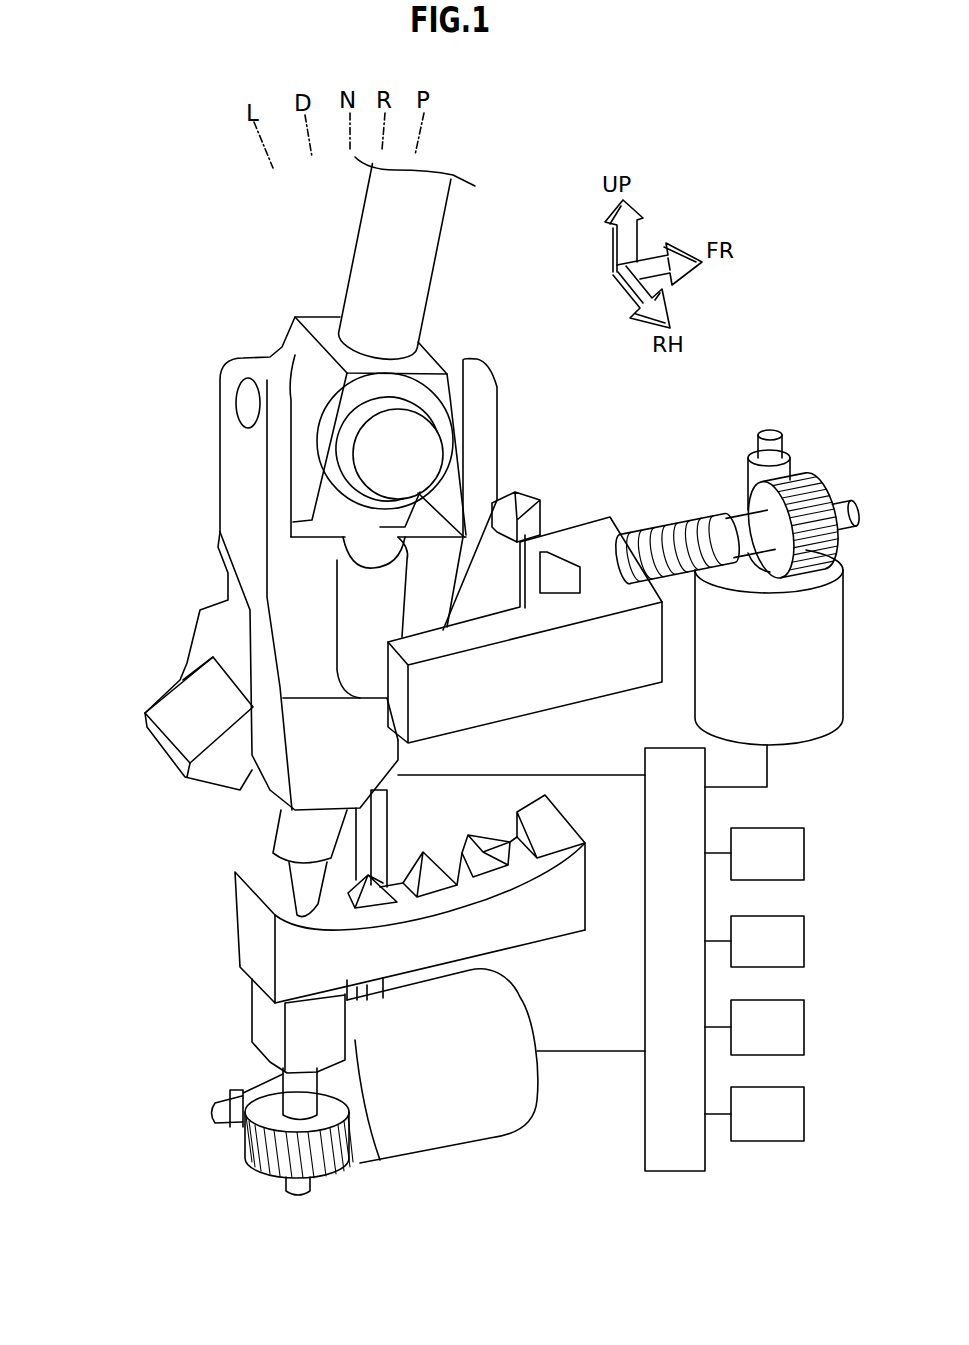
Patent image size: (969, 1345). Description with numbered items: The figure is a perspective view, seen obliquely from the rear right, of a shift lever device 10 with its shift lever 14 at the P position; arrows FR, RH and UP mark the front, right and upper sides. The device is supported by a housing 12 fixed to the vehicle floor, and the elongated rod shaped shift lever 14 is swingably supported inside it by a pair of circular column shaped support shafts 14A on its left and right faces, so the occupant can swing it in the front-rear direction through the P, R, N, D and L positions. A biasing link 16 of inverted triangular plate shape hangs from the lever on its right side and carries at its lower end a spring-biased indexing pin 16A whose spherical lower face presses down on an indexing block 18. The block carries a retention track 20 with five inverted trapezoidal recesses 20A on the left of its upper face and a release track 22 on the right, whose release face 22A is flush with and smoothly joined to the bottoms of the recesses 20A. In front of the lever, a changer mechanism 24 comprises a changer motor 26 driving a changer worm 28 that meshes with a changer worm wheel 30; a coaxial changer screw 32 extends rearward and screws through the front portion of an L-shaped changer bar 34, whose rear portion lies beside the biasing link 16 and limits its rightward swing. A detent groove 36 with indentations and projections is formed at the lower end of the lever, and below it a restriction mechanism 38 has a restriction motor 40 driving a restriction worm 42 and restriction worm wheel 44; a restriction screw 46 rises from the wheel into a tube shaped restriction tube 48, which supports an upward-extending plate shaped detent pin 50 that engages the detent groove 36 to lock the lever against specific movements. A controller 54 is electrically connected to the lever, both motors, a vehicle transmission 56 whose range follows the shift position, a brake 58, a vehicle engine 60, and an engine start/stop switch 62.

The shift lever device 10 is at (170, 256).
The housing 12 is at (342, 920).
The shift lever 14 is at (353, 261).
The support shafts 14A is at (430, 442).
The biasing link 16 is at (235, 504).
The indexing pin 16A is at (272, 868).
The indexing block 18 is at (238, 940).
The retention track 20 is at (510, 868).
The recesses 20A is at (453, 870).
The release track 22 is at (537, 860).
The release face 22A is at (472, 888).
The changer mechanism 24 is at (810, 426).
The changer motor 26 is at (693, 693).
The changer worm 28 is at (748, 480).
The changer worm wheel 30 is at (813, 478).
The changer screw 32 is at (660, 528).
The changer bar 34 is at (550, 713).
The detent groove 36 is at (203, 788).
The restriction mechanism 38 is at (162, 1072).
The restriction motor 40 is at (455, 1145).
The restriction worm 42 is at (228, 1084).
The restriction worm wheel 44 is at (243, 1150).
The restriction screw 46 is at (267, 1067).
The restriction tube 48 is at (250, 1010).
The detent pin 50 is at (392, 806).
The controller 54 is at (645, 1104).
The vehicle transmission 56 is at (806, 856).
The brake 58 is at (806, 944).
The vehicle engine 60 is at (806, 1030).
The switch 62 is at (806, 1117).